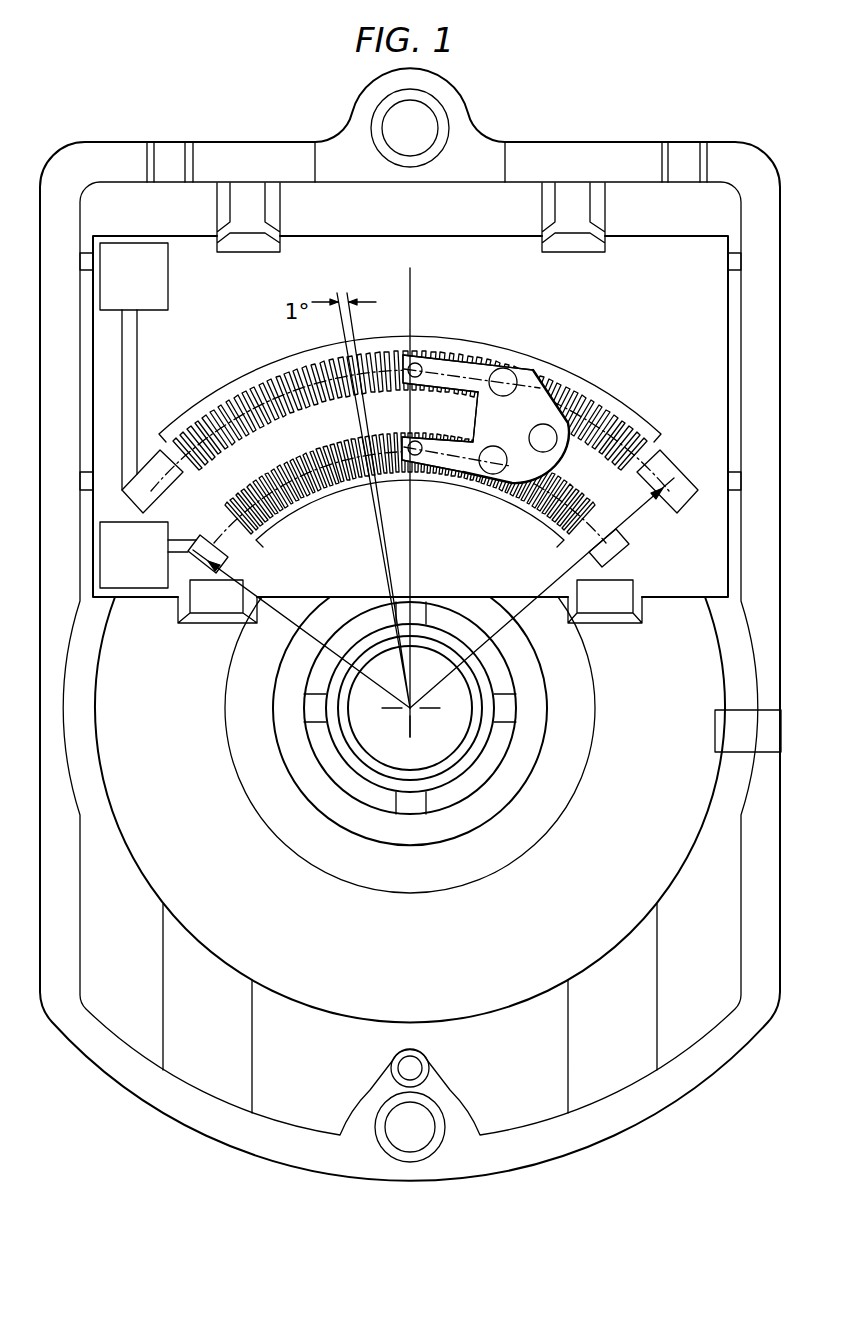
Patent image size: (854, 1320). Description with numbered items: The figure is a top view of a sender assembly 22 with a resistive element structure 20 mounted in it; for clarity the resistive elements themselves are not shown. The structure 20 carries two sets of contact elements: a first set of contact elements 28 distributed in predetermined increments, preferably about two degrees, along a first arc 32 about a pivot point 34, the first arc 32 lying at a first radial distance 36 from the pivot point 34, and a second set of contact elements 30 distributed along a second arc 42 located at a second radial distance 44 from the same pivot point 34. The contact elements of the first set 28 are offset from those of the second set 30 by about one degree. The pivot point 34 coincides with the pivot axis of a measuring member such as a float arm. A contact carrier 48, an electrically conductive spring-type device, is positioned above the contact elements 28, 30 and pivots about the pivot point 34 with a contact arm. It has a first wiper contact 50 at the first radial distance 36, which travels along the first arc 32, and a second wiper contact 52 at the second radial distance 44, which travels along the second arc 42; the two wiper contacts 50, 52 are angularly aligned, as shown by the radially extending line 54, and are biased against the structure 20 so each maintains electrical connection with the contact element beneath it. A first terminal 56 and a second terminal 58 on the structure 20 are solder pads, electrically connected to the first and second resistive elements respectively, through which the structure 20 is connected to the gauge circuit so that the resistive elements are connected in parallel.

The resistive element structure 20 is at (658, 304).
The sender assembly 22 is at (565, 125).
The first set of contact elements 28 is at (437, 486).
The second set of contact elements 30 is at (248, 378).
The first arc 32 is at (597, 561).
The pivot point 34 is at (406, 712).
The first radial distance 36 is at (248, 582).
The second arc 42 is at (670, 487).
The second radial distance 44 is at (557, 578).
The contact carrier 48 is at (528, 372).
The first wiper contact 50 is at (423, 441).
The second wiper contact 52 is at (418, 360).
The radially extending line 54 is at (410, 290).
The first terminal 56 is at (120, 567).
The second terminal 58 is at (120, 289).